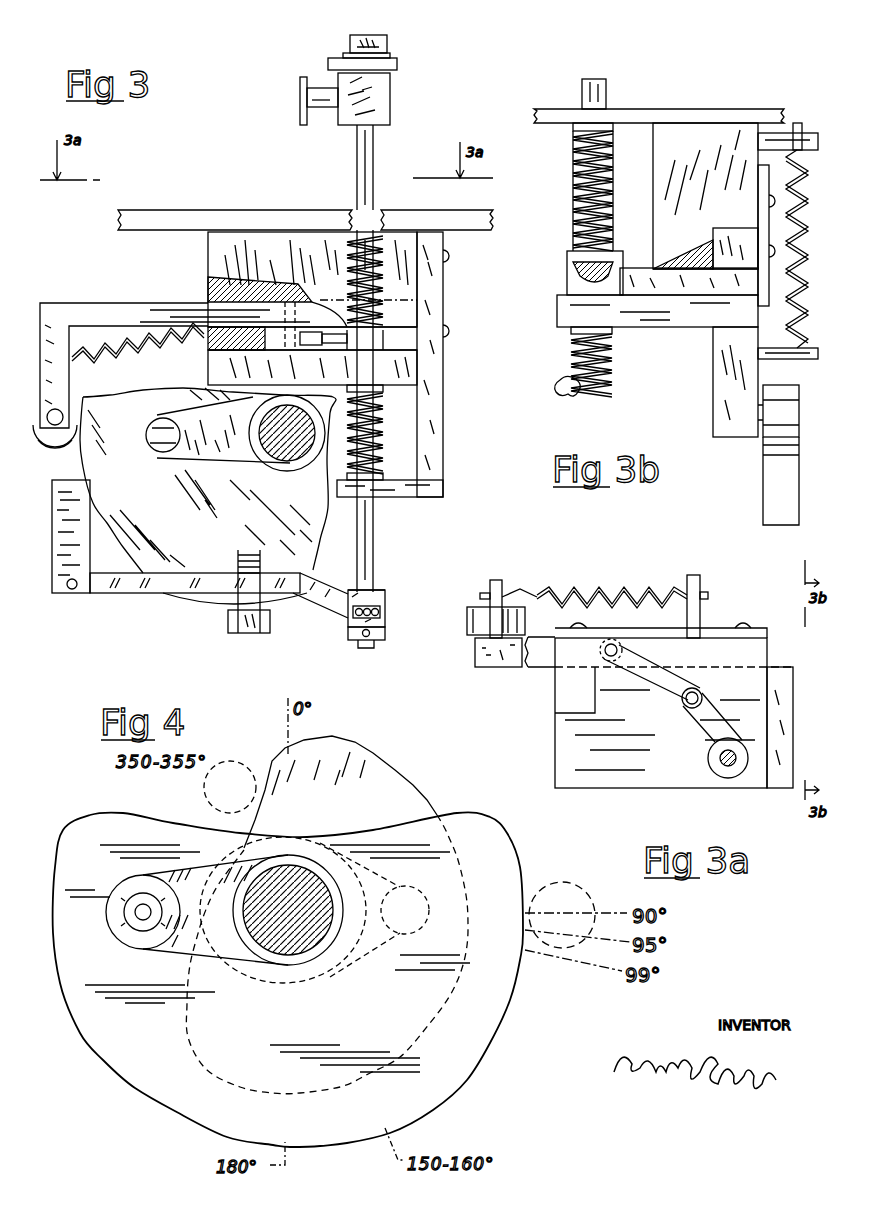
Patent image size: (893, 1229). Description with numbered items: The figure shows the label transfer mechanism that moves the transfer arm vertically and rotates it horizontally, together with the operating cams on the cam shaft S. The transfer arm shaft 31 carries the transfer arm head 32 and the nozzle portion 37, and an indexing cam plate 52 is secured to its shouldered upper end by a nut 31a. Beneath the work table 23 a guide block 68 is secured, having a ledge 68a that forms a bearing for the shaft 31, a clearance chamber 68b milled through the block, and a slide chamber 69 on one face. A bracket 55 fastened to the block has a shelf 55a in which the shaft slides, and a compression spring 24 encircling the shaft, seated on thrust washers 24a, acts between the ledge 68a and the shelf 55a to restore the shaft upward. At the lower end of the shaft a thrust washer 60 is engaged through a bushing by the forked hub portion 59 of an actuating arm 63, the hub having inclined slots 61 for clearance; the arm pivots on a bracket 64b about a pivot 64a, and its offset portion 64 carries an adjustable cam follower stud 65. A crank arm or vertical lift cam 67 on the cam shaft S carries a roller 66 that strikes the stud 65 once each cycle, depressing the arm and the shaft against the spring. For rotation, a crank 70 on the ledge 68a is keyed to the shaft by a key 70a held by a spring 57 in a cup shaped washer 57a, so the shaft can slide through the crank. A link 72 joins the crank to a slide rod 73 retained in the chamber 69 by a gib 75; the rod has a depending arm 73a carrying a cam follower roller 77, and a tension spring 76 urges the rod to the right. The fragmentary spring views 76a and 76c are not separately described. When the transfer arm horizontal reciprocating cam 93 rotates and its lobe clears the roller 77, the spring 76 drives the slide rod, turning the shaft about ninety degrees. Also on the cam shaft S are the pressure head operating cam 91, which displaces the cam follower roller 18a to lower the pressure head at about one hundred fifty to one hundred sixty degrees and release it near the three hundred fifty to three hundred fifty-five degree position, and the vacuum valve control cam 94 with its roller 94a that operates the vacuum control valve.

In FIG. 4, the cam follower roller 18a is at (204, 786).
In FIG. 3, the work table 23 is at (455, 211).
In FIG. 3B, the work table 23 is at (725, 109).
In FIG. 3, the compression spring 24 is at (383, 433).
In FIG. 3B, the compression spring 24 is at (612, 355).
In FIG. 3, the thrust washers 24a is at (383, 392).
In FIG. 3B, the thrust washers 24a is at (571, 332).
In FIG. 3, the transfer arm shaft 31 is at (376, 151).
In FIG. 3B, the transfer arm shaft 31 is at (606, 86).
In FIG. 3A, the transfer arm shaft 31 is at (728, 766).
In FIG. 3, the nut 31a is at (388, 41).
In FIG. 3, the transfer arm head 32 is at (390, 97).
In FIG. 3, the nozzle portion 37 is at (301, 113).
In FIG. 3, the indexing cam plate 52 is at (397, 64).
In FIG. 3, the bracket 55 is at (443, 397).
In FIG. 3A, the bracket 55 is at (793, 751).
In FIG. 3, the shelf 55a is at (395, 498).
In FIG. 3B, the spring 57 is at (613, 188).
In FIG. 3B, the cup shaped washer 57a is at (573, 126).
In FIG. 3, the forked hub portion 59 is at (385, 612).
In FIG. 3, the thrust washer 60 is at (385, 633).
In FIG. 3, the inclined slots 61 is at (380, 596).
In FIG. 3, the actuating arm 63 is at (325, 612).
In FIG. 3, the offset portion 64 is at (128, 594).
In FIG. 3, the pivot 64a is at (76, 590).
In FIG. 3, the bracket 64b is at (68, 483).
In FIG. 3, the adjustable cam follower stud 65 is at (238, 630).
In FIG. 3, the roller 66 is at (156, 450).
In FIG. 4, the roller 66 is at (417, 889).
In FIG. 3, the crank arm or vertical lift cam 67 is at (233, 462).
In FIG. 4, the crank arm or vertical lift cam 67 is at (343, 966).
In FIG. 3, the guide block 68 is at (208, 259).
In FIG. 3, the ledge 68a is at (208, 374).
In FIG. 3B, the ledge 68a is at (557, 310).
In FIG. 3, the clearance chamber 68b is at (400, 341).
In FIG. 3B, the slide chamber 69 is at (710, 228).
In FIG. 3B, the crank 70 is at (620, 272).
In FIG. 3A, the crank 70 is at (708, 752).
In FIG. 3B, the key 70a is at (575, 278).
In FIG. 3A, the link 72 is at (660, 690).
In FIG. 3, the slide rod 73 is at (95, 303).
In FIG. 3, the depending arm 73a is at (69, 386).
In FIG. 3B, the depending arm 73a is at (713, 393).
In FIG. 3B, the gib 75 is at (772, 306).
In FIG. 3A, the gib 75 is at (720, 628).
In FIG. 3, the tension spring 76 is at (138, 354).
In FIG. 3B, the tension spring 76 is at (806, 172).
In FIG. 3B, the spring pin 76a is at (803, 124).
In FIG. 3A, the spring pin 76a is at (497, 582).
In FIG. 3A, the spring 76c is at (600, 588).
In FIG. 3, the cam follower roller 77 is at (44, 446).
In FIG. 3B, the cam follower roller 77 is at (796, 386).
In FIG. 3A, the cam follower roller 77 is at (467, 640).
In FIG. 4, the cam follower roller 77 is at (572, 902).
In FIG. 4, the pressure head operating cam 91 is at (396, 763).
In FIG. 3, the transfer arm horizontal reciprocating cam 93 is at (200, 605).
In FIG. 3B, the transfer arm horizontal reciprocating cam 93 is at (763, 484).
In FIG. 4, the transfer arm horizontal reciprocating cam 93 is at (103, 1057).
In FIG. 4, the vacuum valve control cam 94 is at (176, 866).
In FIG. 4, the roller 94a is at (137, 884).
In FIG. 3, the cam shaft S is at (300, 458).
In FIG. 4, the cam shaft S is at (333, 884).